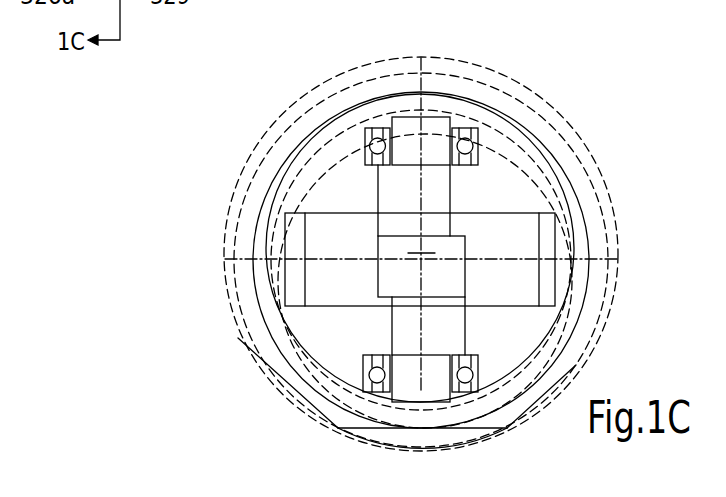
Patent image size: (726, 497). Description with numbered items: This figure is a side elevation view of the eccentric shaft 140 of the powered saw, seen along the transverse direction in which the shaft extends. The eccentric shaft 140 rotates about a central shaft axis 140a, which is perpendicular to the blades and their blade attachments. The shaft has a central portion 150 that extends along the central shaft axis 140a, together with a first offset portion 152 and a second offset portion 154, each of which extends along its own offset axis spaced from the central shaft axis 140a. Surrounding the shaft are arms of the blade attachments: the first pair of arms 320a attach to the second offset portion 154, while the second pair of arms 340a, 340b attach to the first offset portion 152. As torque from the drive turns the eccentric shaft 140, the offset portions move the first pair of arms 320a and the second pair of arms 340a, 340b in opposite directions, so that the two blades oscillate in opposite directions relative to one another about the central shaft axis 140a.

The eccentric shaft 140 is at (435, 130).
The central shaft axis 140a is at (422, 80).
The central portion 150 is at (400, 277).
The first offset portion 152 is at (393, 193).
The second offset portion 154 is at (403, 327).
The first pair of arms 320a is at (352, 348).
The second pair of arms 340a is at (512, 187).
The second pair of arms 340b is at (347, 163).